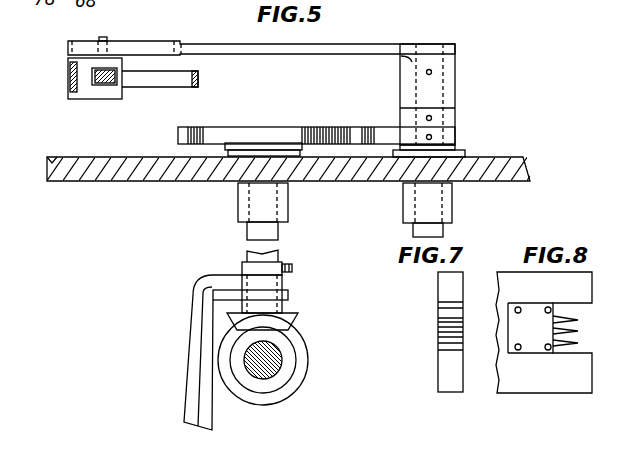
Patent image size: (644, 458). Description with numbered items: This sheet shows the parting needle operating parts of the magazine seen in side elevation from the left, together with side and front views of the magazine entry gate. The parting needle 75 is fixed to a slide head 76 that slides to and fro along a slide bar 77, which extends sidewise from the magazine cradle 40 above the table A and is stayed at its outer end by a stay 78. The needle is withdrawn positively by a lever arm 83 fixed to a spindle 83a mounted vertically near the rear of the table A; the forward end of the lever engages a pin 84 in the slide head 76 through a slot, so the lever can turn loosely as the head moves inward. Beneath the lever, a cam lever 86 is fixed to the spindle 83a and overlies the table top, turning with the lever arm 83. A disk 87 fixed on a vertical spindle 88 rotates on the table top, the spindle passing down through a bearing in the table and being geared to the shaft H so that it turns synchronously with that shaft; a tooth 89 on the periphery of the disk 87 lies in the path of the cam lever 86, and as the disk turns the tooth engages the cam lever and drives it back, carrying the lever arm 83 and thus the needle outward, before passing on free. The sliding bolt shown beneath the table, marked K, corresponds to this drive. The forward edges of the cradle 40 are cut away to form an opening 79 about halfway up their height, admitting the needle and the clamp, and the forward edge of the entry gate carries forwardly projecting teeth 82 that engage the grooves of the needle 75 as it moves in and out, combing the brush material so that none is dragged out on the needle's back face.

In FIG. 5, the parting needle 75 is at (68, 78).
In FIG. 5, the slide head 76 is at (88, 95).
In FIG. 5, the slide bar 77 is at (115, 84).
In FIG. 5, the stay 78 is at (183, 78).
In FIG. 5, the lever arm 83 is at (345, 50).
In FIG. 5, the spindle 83a is at (433, 45).
In FIG. 5, the pin 84 is at (107, 39).
In FIG. 5, the cam lever 86 is at (390, 136).
In FIG. 5, the disk 87 is at (303, 141).
In FIG. 5, the vertical spindle 88 is at (280, 233).
In FIG. 5, the tooth 89 is at (182, 126).
In FIG. 5, the table A is at (70, 180).
In FIG. 5, the shaft K is at (282, 358).
In FIG. 7, the teeth 82 is at (438, 337).
In FIG. 8, the teeth 82 is at (579, 331).
In FIG. 8, the cradle 40 is at (544, 332).
In FIG. 8, the opening 79 is at (580, 346).